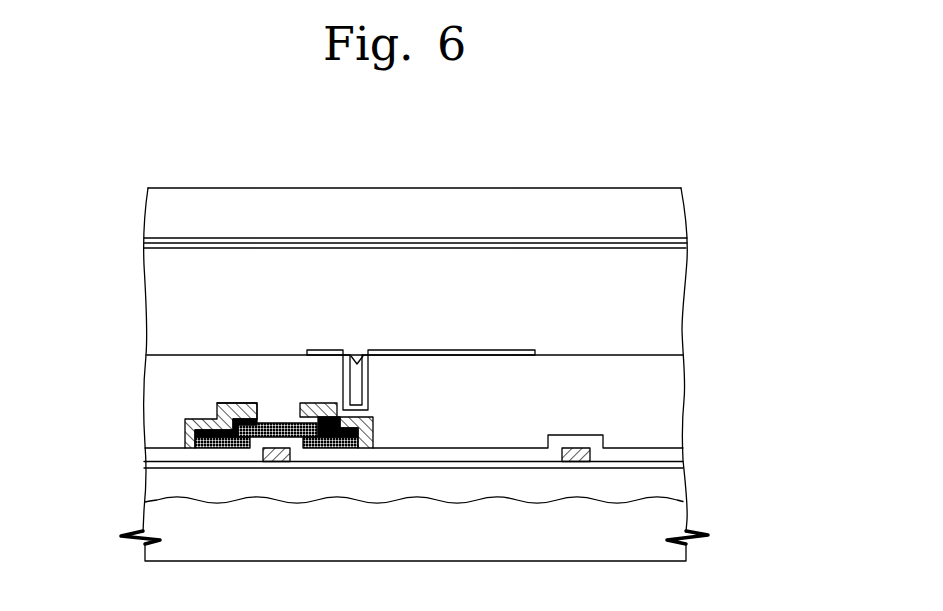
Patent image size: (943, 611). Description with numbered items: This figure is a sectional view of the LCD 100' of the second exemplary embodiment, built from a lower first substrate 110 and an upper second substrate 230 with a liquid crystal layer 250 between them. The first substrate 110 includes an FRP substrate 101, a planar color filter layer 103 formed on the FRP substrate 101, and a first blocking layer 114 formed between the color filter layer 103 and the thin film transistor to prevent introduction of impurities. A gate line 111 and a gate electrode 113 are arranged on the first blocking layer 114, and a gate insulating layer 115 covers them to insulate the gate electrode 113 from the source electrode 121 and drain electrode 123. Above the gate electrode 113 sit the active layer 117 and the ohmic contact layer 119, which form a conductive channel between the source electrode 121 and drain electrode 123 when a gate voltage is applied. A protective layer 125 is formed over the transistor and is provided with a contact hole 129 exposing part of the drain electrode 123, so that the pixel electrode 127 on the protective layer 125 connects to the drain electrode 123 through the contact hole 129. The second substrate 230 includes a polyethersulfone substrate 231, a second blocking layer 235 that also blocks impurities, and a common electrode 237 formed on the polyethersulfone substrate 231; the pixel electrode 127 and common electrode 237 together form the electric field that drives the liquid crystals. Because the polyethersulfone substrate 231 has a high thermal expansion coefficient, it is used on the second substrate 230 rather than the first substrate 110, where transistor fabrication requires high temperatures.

The LCD 100' is at (414, 155).
The second substrate 230 is at (120, 190).
The polyethersulfone substrate 231 is at (673, 218).
The second blocking layer 235 is at (683, 243).
The common electrode 237 is at (683, 248).
The liquid crystal layer 250 is at (677, 297).
The first substrate 110 is at (120, 357).
The protective layer 125 is at (675, 400).
The pixel electrode 127 is at (441, 350).
The contact hole 129 is at (357, 355).
The gate insulating layer 115 is at (683, 448).
The first blocking layer 114 is at (683, 462).
The planar color filter layer 103 is at (675, 488).
The FRP substrate 101 is at (675, 527).
The active layer 117 is at (223, 443).
The gate electrode 113 is at (277, 461).
The gate line 111 is at (574, 461).
The source electrode 121 is at (191, 419).
The ohmic contact layer 119 is at (240, 403).
The drain electrode 123 is at (313, 403).